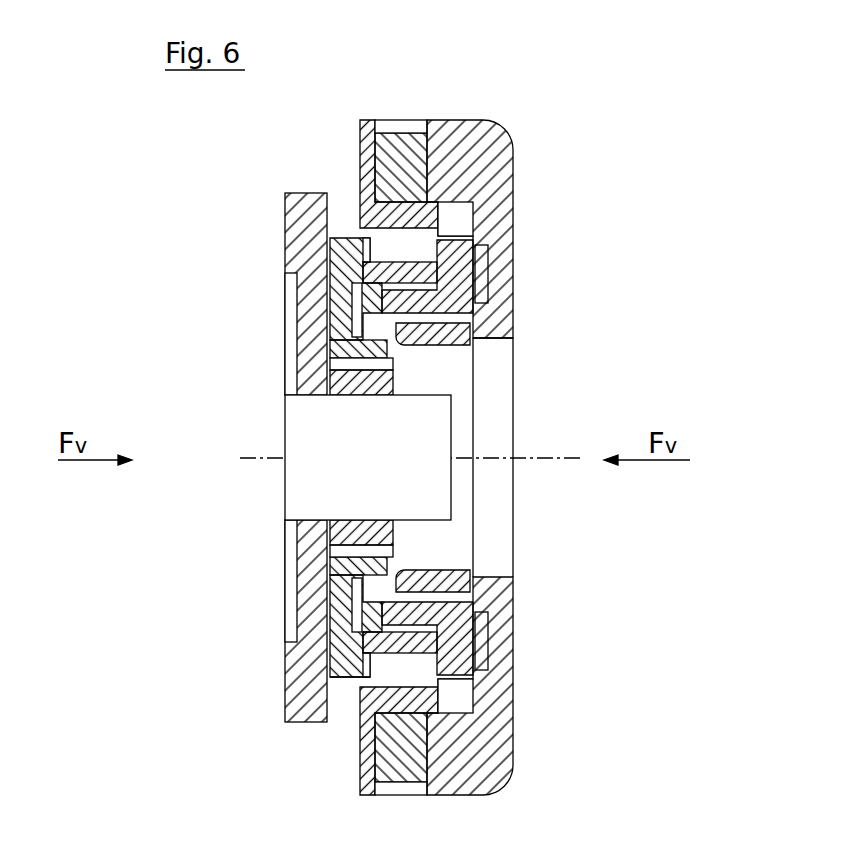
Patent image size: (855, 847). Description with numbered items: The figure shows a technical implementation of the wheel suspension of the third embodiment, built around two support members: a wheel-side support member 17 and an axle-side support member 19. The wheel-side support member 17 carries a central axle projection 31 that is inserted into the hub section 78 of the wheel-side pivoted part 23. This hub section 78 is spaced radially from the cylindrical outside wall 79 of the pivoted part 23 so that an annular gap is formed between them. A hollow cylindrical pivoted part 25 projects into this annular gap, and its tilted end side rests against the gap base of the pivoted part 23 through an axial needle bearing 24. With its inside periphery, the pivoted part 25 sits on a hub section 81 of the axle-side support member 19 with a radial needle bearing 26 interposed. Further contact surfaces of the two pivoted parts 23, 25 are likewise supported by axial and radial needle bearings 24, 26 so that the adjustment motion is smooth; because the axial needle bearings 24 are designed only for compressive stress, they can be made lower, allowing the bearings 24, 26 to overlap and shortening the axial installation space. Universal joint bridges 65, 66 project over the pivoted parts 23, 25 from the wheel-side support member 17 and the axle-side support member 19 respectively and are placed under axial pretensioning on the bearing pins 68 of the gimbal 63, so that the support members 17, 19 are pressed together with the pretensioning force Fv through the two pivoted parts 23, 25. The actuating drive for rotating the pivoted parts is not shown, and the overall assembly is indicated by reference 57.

The wheel-side support member 17 is at (288, 225).
The axle-side support member 19 is at (503, 495).
The wheel-side pivoted part 23 is at (347, 237).
The axial needle bearing 24 is at (350, 325).
The hollow cylindrical pivoted part 25 is at (465, 680).
The radial needle bearing 26 is at (398, 283).
The central axle projection 31 is at (330, 397).
The clutch assembly 57 is at (393, 92).
The gimbal 63 is at (346, 680).
The universal joint bridge 65 is at (303, 481).
The universal joint bridge 66 is at (443, 130).
The bearing pin 68 is at (407, 782).
The hub section 78 is at (340, 347).
The cylindrical outside wall 79 is at (478, 218).
The hub section 81 is at (457, 340).